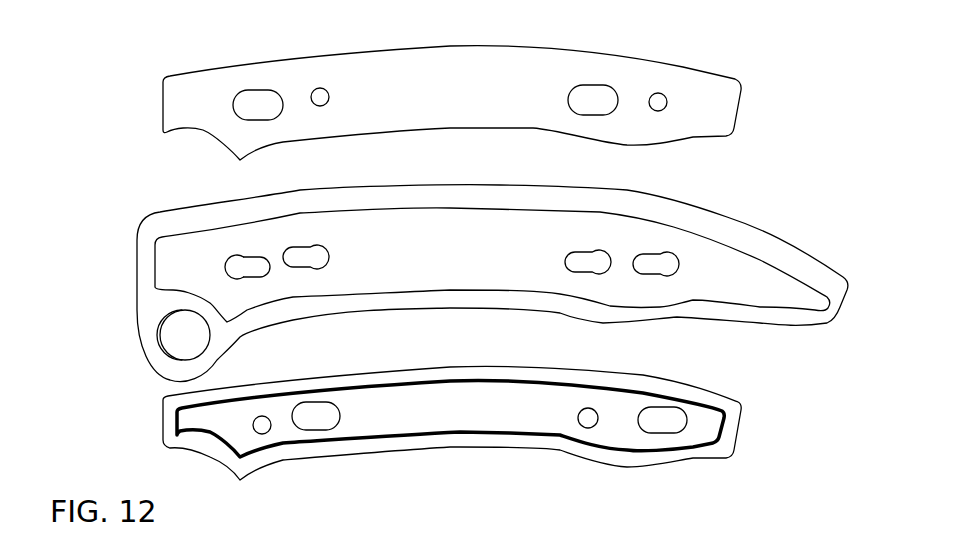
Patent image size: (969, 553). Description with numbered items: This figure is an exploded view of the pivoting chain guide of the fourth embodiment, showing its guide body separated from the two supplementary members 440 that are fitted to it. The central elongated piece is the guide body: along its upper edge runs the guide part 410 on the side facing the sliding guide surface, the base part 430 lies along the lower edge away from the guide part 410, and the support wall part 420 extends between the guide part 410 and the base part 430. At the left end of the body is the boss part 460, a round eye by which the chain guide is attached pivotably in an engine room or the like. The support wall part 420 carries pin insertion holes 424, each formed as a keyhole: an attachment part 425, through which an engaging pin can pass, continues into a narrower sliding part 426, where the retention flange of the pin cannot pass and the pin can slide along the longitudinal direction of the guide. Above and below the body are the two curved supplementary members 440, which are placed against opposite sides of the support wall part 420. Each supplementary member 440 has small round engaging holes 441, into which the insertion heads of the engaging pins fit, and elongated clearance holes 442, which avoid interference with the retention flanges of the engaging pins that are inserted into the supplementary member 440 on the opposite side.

The guide part 410 is at (459, 239).
The support wall part 420 is at (700, 273).
The pin insertion hole 424 is at (418, 187).
The attachment part 425 is at (233, 262).
The sliding part 426 is at (257, 262).
The base part 430 is at (597, 315).
The supplementary member 440 is at (413, 87).
The engaging hole 441 is at (320, 97).
The clearance hole 442 is at (260, 107).
The boss part 460 is at (150, 340).